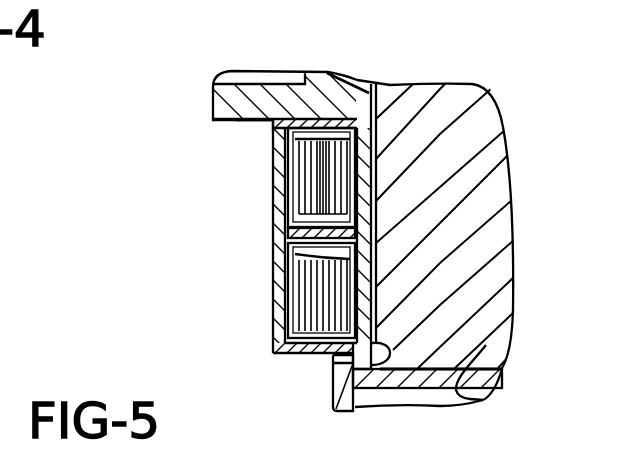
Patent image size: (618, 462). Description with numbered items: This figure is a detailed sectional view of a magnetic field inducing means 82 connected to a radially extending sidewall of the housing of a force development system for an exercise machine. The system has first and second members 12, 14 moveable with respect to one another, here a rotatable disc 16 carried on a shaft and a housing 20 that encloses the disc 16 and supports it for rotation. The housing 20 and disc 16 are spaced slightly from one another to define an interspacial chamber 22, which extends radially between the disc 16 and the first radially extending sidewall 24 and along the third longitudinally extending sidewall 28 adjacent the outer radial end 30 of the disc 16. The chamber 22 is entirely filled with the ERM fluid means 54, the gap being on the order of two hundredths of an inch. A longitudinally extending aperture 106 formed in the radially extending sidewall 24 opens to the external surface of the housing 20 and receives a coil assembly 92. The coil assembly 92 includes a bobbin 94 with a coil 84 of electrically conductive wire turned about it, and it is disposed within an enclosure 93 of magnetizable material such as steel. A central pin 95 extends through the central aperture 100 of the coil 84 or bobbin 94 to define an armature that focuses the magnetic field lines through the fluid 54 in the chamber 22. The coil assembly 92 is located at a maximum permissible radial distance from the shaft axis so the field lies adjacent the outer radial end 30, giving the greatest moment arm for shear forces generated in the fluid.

The first member 12 is at (504, 124).
The second member 14 is at (341, 389).
The rotatable disc 16 is at (431, 98).
The housing 20 is at (222, 102).
The interspacial chamber 22 is at (503, 369).
The first radially extending sidewall 24 is at (338, 370).
The third longitudinally extending sidewall 28 is at (483, 400).
The outer radial end 30 is at (486, 345).
The ERM fluid means 54 is at (368, 89).
The magnetic field inducing means 82 is at (264, 162).
The coil 84 is at (308, 202).
The coil assembly 92 is at (270, 177).
The enclosure 93 is at (283, 340).
The bobbin 94 is at (300, 190).
The central pin 95 is at (290, 235).
The central aperture 100 is at (304, 244).
The longitudinally extending aperture 106 is at (242, 121).